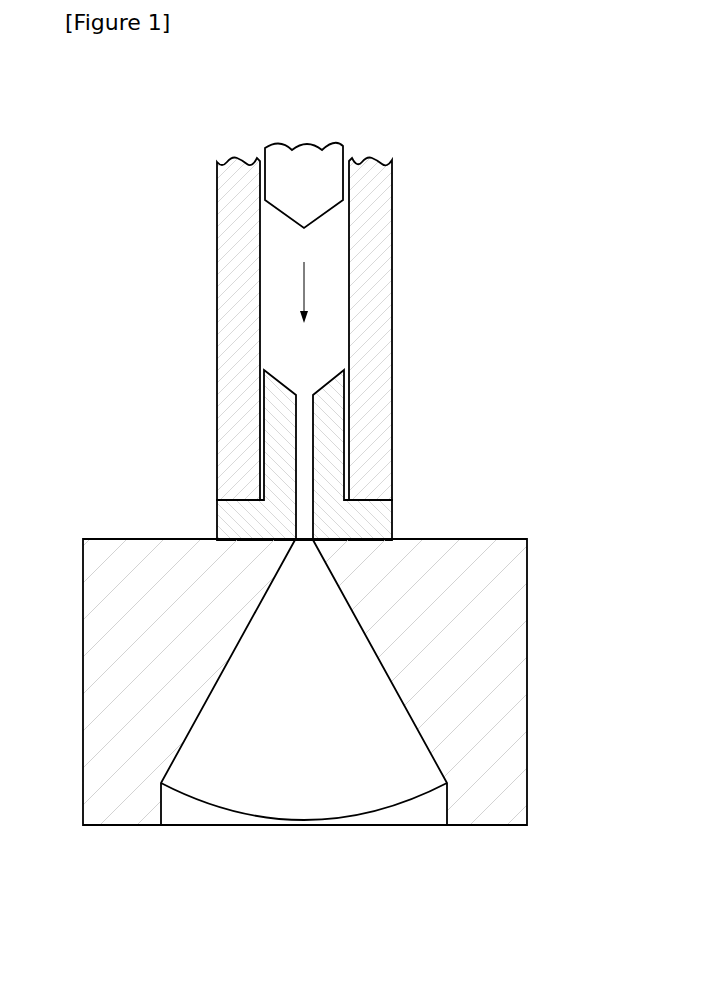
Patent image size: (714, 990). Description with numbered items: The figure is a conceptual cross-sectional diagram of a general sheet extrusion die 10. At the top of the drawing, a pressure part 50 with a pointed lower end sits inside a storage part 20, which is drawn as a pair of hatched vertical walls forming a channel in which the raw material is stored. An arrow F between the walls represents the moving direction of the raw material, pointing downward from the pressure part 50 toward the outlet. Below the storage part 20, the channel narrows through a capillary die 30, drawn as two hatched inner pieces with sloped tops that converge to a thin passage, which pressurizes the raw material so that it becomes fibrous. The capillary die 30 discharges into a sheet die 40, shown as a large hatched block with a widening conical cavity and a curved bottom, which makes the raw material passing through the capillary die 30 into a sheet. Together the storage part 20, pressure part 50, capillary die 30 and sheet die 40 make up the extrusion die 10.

The sheet extrusion die 10 is at (116, 86).
The storage part 20 is at (331, 237).
The capillary die 30 is at (393, 523).
The sheet die 40 is at (527, 579).
The pressure part 50 is at (303, 178).
The moving direction of the raw material F is at (304, 288).